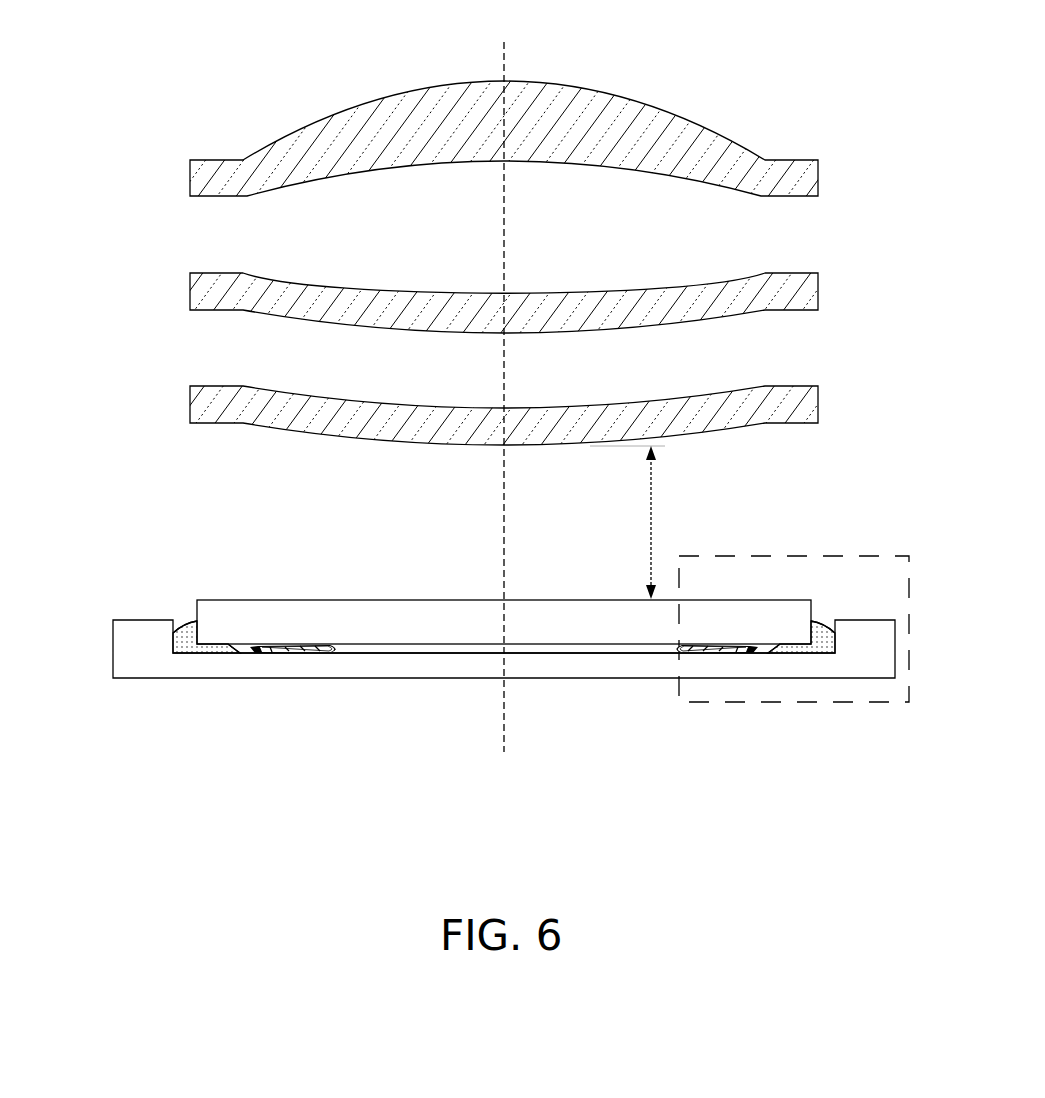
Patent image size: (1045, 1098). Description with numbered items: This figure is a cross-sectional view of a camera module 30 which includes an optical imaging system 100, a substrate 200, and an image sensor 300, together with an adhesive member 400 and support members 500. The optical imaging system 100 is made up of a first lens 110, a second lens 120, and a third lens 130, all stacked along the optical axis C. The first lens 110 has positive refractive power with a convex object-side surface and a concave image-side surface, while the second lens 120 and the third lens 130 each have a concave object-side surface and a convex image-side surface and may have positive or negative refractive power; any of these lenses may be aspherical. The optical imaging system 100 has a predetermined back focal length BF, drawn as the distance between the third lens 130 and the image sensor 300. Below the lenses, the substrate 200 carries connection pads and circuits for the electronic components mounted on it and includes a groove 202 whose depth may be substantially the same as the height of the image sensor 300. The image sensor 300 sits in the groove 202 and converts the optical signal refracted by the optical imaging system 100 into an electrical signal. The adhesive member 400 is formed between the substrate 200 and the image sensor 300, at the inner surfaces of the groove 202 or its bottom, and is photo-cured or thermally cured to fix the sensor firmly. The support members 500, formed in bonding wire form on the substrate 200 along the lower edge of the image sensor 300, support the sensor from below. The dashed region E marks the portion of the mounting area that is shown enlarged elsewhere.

The camera module 30 is at (841, 129).
The optical imaging system 100 is at (106, 162).
The first lens 110 is at (198, 173).
The second lens 120 is at (198, 290).
The third lens 130 is at (198, 405).
The substrate 200 is at (140, 680).
The groove 202 is at (407, 654).
The image sensor 300 is at (251, 607).
The adhesive member 400 is at (194, 660).
The support member 500 is at (298, 655).
The optical axis C is at (504, 401).
The back focal length BF is at (627, 522).
The enlarged region E is at (846, 555).